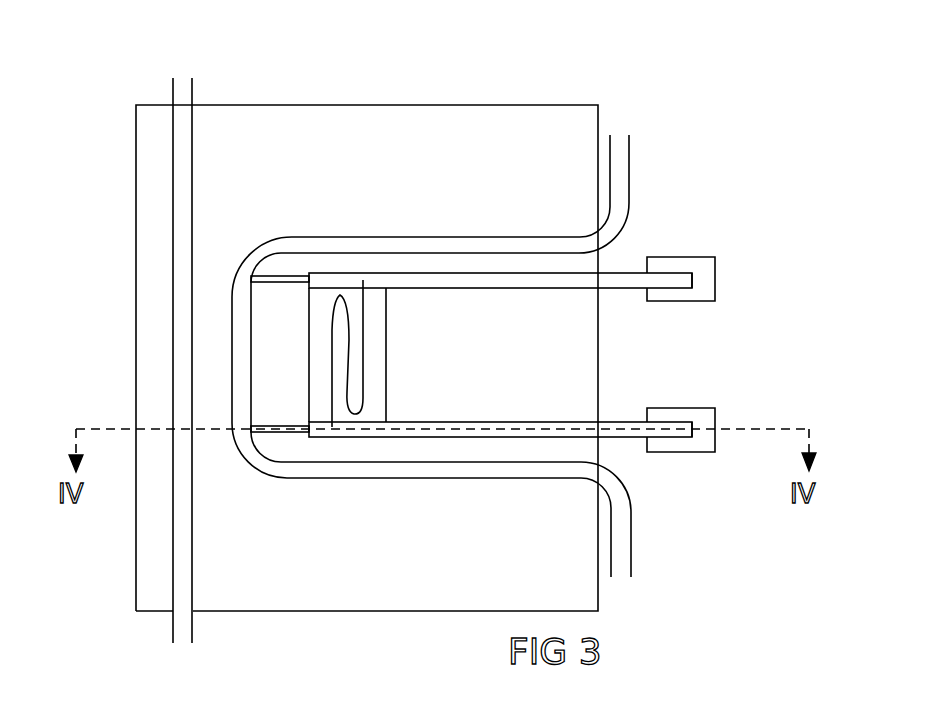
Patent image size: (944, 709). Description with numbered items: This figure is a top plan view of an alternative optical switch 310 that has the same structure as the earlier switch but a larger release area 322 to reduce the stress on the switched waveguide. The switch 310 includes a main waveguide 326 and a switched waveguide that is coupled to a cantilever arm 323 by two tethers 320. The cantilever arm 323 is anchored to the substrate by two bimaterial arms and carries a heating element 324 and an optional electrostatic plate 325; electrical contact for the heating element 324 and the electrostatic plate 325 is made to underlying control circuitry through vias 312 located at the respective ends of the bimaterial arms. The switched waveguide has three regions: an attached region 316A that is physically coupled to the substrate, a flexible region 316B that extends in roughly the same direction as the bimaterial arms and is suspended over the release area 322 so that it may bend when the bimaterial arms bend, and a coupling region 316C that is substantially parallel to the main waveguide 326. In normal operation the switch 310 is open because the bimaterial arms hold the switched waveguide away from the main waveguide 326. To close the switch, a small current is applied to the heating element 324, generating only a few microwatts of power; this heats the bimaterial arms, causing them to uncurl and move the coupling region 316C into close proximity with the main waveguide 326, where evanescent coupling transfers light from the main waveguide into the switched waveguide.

The switch 310 is at (526, 74).
The vias 312 is at (705, 259).
The attached region 316A is at (632, 166).
The flexible region 316B is at (441, 238).
The coupling region 316C is at (234, 296).
The tethers 320 is at (284, 280).
The release area 322 is at (357, 116).
The cantilever arm 323 is at (402, 222).
The heating element 324 is at (363, 352).
The electrostatic plate 325 is at (385, 378).
The main waveguide 326 is at (193, 90).